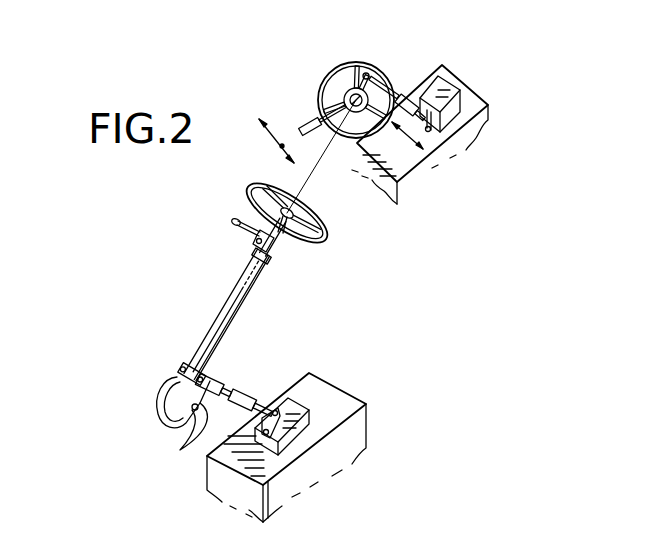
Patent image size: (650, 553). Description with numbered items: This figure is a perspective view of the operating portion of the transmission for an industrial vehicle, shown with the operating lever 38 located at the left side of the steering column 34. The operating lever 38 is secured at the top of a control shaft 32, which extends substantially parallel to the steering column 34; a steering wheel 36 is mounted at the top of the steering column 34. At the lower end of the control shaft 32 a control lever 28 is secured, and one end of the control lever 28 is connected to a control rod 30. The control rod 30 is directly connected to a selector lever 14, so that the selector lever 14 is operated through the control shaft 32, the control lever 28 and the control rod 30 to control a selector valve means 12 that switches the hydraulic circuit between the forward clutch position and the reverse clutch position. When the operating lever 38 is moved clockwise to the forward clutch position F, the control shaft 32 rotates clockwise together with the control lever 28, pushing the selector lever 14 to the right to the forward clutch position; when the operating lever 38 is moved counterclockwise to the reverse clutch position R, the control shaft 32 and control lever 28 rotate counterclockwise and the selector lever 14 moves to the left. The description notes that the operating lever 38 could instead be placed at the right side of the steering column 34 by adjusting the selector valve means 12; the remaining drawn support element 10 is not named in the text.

The tractor frame / support block 10 is at (470, 68).
The selector valve means 12 is at (462, 90).
The selector lever 14 is at (436, 80).
The control lever 28 is at (206, 373).
The control rod 30 is at (398, 94).
The control shaft 32 is at (212, 310).
The steering column 34 is at (258, 274).
The steering wheel 36 is at (357, 65).
The operating lever 38 is at (319, 118).